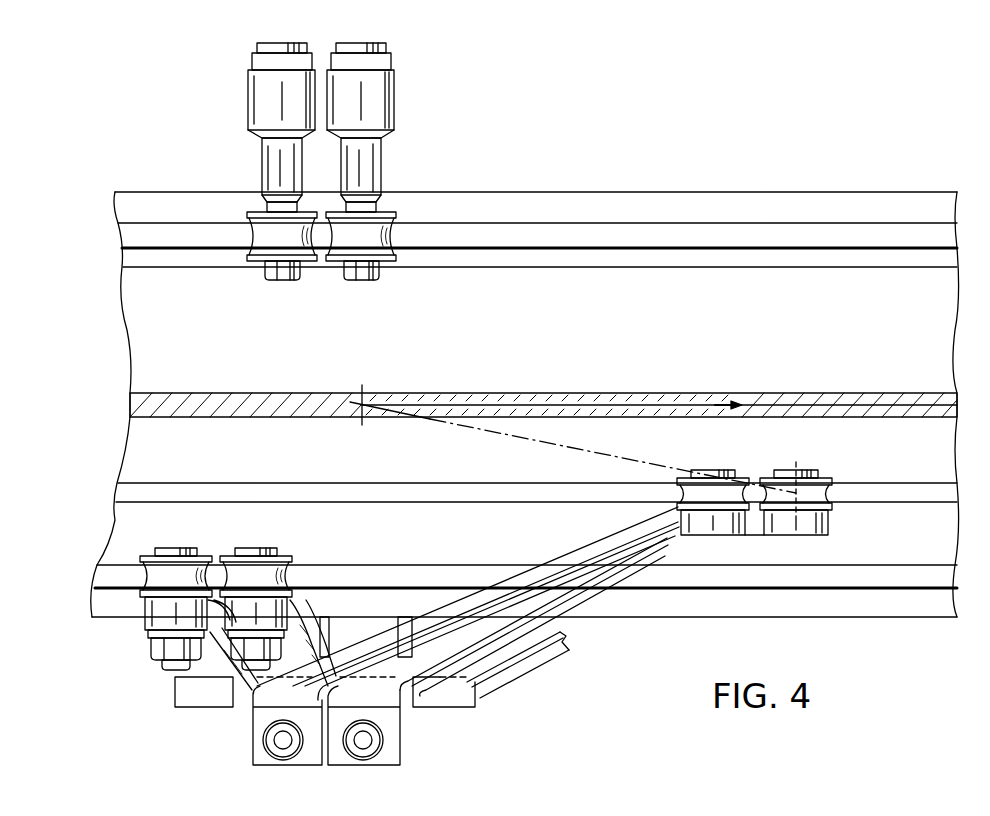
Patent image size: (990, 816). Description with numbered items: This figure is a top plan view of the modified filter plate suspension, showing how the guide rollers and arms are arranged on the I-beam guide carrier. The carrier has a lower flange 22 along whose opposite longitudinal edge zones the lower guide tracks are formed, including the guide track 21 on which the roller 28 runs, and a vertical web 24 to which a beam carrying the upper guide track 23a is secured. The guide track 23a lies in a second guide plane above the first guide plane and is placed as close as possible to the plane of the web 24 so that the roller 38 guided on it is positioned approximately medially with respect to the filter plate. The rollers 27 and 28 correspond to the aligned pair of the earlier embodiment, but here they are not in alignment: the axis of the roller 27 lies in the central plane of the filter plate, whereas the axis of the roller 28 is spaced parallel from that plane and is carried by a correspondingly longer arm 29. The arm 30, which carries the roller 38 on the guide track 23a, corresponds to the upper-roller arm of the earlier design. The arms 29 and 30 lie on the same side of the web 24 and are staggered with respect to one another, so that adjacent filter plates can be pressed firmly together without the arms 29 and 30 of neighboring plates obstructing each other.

The guide track 21 is at (100, 578).
The lower flange 22 is at (118, 238).
The guide track 23a is at (120, 493).
The web 24 is at (135, 405).
The roller 27 is at (381, 262).
The roller 28 is at (234, 560).
The arm 29 is at (320, 617).
The arm 30 is at (600, 594).
The roller 38 is at (826, 480).